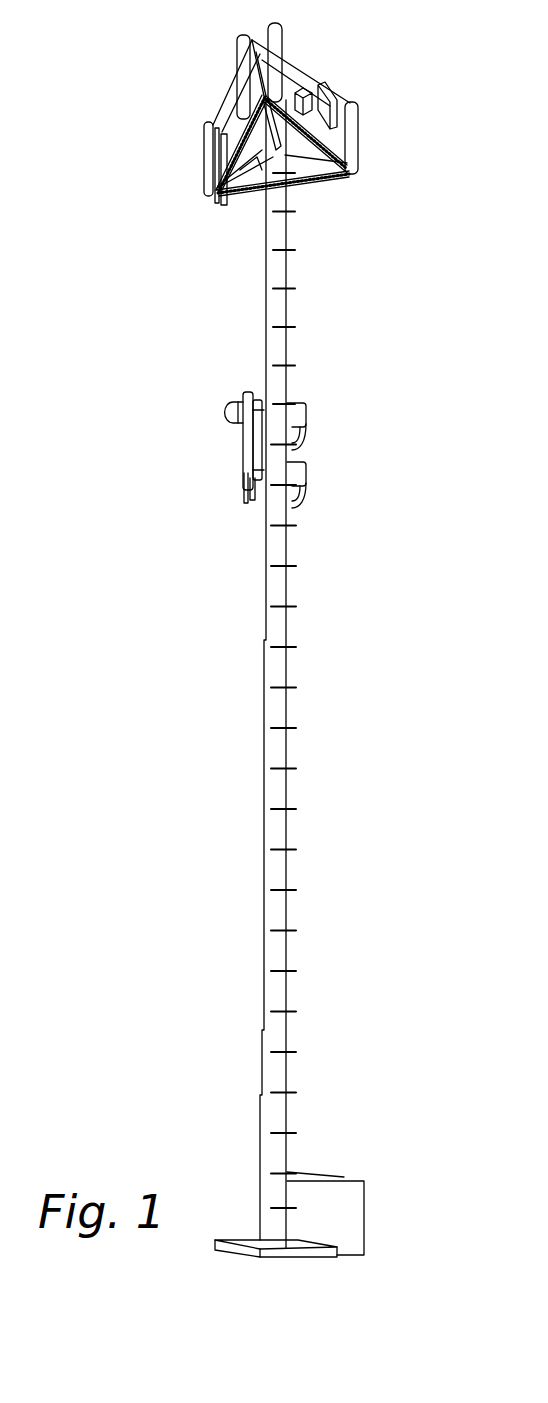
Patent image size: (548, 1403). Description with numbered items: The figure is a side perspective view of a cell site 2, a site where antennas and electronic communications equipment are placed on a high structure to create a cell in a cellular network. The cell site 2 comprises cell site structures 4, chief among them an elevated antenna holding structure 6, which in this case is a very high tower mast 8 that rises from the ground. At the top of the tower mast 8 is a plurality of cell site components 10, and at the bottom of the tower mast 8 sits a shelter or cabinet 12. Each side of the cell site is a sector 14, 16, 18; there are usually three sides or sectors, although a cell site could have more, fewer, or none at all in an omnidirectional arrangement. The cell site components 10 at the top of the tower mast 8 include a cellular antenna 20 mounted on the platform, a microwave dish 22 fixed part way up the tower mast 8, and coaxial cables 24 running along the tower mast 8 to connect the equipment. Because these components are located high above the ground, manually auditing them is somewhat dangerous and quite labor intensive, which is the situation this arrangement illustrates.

The cell site 2 is at (438, 815).
The cell site structures 4 is at (450, 362).
The elevated antenna holding structure 6 is at (287, 710).
The tower mast 8 is at (268, 587).
The cell site components 10 is at (304, 118).
The shelter or cabinet 12 is at (345, 1178).
The sector 14 is at (300, 83).
The sector 16 is at (222, 105).
The sector 18 is at (315, 180).
The cellular antenna 20 is at (240, 34).
The microwave dish 22 is at (228, 412).
The coaxial cables 24 is at (300, 497).